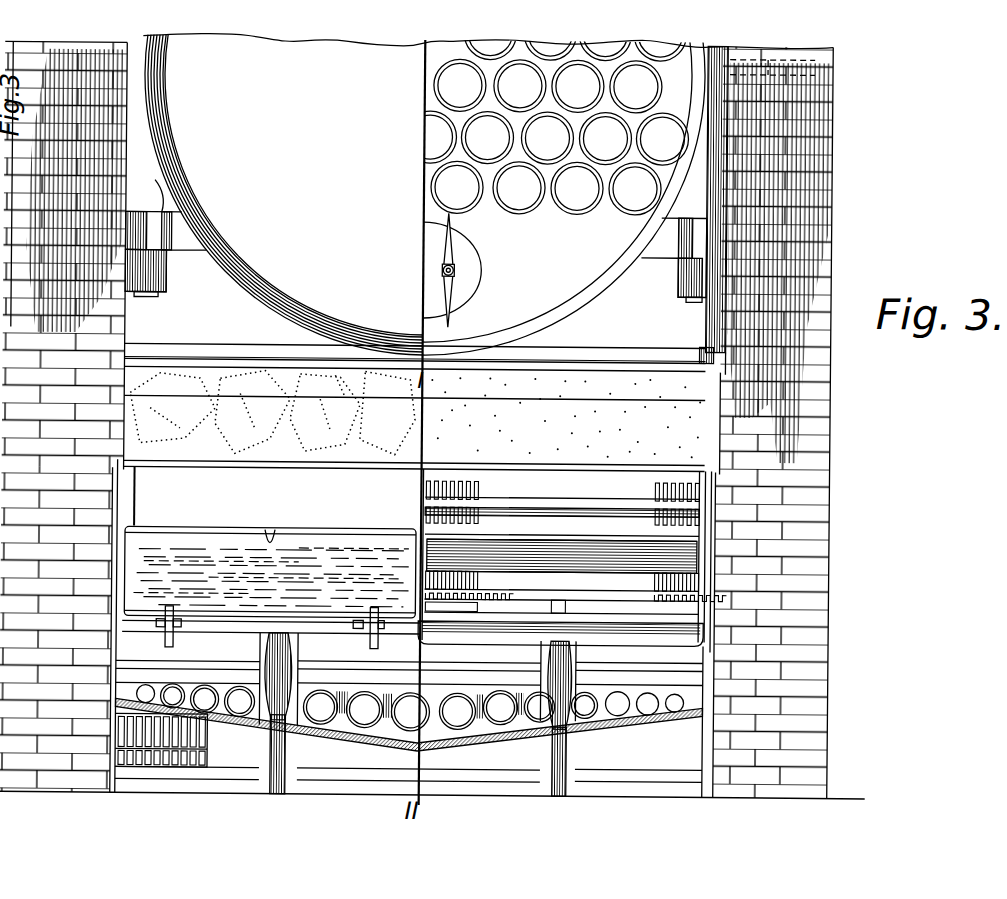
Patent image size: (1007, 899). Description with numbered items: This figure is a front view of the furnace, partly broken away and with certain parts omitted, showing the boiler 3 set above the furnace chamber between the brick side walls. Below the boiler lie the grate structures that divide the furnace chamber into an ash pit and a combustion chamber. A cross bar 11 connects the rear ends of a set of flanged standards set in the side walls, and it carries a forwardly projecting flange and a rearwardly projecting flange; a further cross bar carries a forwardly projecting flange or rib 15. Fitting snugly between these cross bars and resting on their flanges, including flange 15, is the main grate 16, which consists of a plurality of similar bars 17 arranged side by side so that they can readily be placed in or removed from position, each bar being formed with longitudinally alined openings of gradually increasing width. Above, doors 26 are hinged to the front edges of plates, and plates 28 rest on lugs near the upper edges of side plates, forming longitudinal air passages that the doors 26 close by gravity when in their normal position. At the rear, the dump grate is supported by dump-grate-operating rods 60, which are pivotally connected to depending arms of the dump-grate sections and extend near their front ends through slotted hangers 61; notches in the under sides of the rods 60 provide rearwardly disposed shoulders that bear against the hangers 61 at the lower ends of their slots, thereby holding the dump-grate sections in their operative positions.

The boiler 3 is at (418, 178).
The doors 26 is at (716, 666).
The plates 28 is at (575, 561).
The dump-grate-operating rod 60 is at (282, 634).
The slotted hangers 61 is at (268, 651).
The cross bar 11 is at (409, 729).
The bars 17 is at (196, 743).
The main grate 16 is at (202, 757).
The flange 15 is at (352, 785).